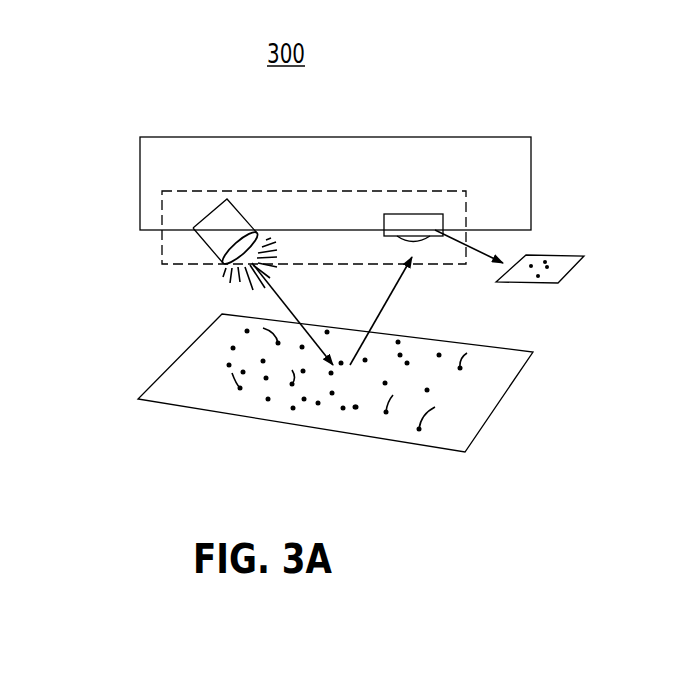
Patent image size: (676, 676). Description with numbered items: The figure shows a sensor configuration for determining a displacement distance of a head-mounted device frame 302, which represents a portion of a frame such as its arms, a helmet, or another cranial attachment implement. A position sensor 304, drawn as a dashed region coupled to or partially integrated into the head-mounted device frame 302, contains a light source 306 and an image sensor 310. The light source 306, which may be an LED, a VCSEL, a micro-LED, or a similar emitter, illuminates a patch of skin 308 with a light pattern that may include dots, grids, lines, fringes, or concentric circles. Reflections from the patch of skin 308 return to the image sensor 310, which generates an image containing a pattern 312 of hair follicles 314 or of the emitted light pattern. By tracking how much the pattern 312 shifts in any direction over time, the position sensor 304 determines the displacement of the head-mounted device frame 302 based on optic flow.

The head-mounted device frame 302 is at (393, 165).
The position sensor 304 is at (423, 191).
The light source 306 is at (230, 222).
The patch of skin 308 is at (462, 440).
The image sensor 310 is at (389, 221).
The pattern 312 is at (565, 275).
The hair follicles 314 is at (293, 408).